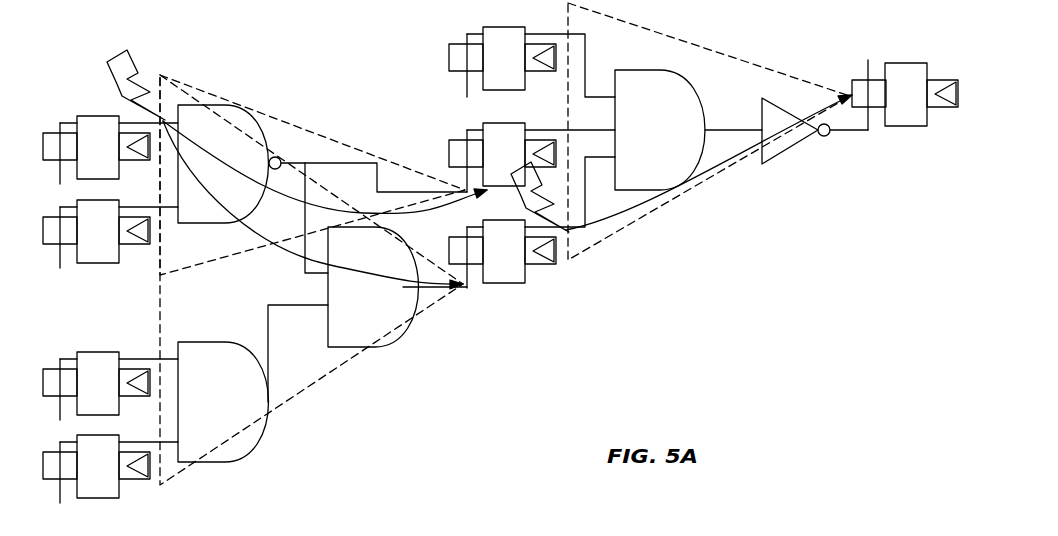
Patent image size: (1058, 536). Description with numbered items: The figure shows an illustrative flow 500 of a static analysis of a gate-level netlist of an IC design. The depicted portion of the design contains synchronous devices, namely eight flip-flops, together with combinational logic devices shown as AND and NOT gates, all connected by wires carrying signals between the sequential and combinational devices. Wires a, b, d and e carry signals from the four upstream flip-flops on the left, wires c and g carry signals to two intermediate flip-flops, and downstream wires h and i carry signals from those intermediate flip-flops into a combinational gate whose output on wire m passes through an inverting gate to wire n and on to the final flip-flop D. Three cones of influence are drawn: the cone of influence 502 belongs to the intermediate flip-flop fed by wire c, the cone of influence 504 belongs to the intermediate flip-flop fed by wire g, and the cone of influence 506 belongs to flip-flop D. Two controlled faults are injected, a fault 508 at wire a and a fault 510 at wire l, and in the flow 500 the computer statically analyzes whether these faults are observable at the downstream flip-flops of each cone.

The static analysis flow 500 is at (495, 463).
The cone of influence 502 is at (300, 127).
The cone of influence 504 is at (297, 400).
The cone of influence 506 is at (783, 70).
The fault 508 is at (109, 61).
The fault 510 is at (567, 233).